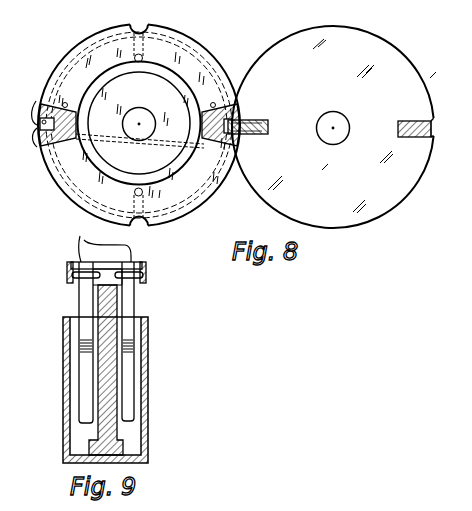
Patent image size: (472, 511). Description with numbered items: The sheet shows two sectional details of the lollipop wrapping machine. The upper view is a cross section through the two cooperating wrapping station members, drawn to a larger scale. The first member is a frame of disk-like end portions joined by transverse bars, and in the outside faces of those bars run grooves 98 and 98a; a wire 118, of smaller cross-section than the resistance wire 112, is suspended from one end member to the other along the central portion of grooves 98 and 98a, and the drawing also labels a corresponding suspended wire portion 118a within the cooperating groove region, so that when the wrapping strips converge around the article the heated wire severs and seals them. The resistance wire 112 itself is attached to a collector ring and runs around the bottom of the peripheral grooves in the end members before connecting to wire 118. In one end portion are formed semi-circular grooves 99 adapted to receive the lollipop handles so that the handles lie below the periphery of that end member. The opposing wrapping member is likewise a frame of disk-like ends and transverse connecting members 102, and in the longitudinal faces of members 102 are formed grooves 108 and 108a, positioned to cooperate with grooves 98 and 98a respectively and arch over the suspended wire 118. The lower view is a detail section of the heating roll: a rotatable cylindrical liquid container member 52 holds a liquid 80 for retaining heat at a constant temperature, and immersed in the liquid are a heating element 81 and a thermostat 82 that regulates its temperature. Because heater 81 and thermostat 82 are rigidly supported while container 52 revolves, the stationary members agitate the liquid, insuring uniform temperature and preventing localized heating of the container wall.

In FIG. 8, the resistance wire 112 is at (97, 42).
In FIG. 8, the semi-circular grooves 99 is at (140, 23).
In FIG. 8, the wire 118 is at (43, 118).
In FIG. 8, the groove 98 is at (46, 131).
In FIG. 8, the groove 98a is at (238, 112).
In FIG. 8, the transverse connecting members 102 is at (257, 119).
In FIG. 8, the key block 118a is at (266, 131).
In FIG. 8, the groove 108a is at (234, 136).
In FIG. 8, the groove 108 is at (432, 129).
In FIG. 9, the liquid 80 is at (136, 351).
In FIG. 9, the heating element 81 is at (83, 363).
In FIG. 9, the thermostat 82 is at (129, 362).
In FIG. 9, the heater roll 52 is at (148, 380).